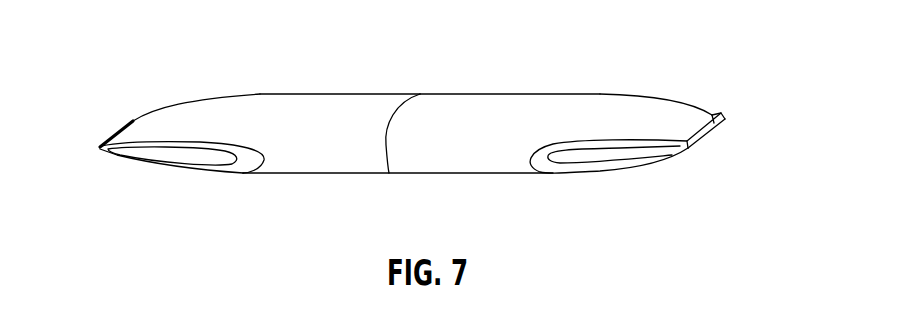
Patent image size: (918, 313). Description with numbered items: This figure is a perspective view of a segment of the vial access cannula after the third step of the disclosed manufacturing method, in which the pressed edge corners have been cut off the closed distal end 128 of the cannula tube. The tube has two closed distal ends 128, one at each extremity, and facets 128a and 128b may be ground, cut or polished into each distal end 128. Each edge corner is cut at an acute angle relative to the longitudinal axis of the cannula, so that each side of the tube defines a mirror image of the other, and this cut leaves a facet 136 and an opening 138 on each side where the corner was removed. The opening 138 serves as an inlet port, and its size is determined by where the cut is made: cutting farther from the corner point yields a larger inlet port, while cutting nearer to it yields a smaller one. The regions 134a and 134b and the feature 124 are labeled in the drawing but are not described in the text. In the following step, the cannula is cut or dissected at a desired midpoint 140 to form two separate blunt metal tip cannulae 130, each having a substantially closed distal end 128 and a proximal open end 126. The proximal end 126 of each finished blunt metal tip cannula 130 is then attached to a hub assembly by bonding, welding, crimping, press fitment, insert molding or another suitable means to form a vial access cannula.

The loop end 124 is at (385, 184).
The proximal open end 126 is at (307, 105).
The closed distal end 128 is at (410, 135).
The facet 128a is at (130, 124).
The facet 128b is at (700, 146).
The blunt metal tip cannula 130 is at (463, 87).
The upper surface portion 134a is at (603, 104).
The lower edge 134b is at (418, 175).
The facet 136 is at (229, 170).
The opening 138 is at (172, 156).
The midpoint 140 is at (403, 103).